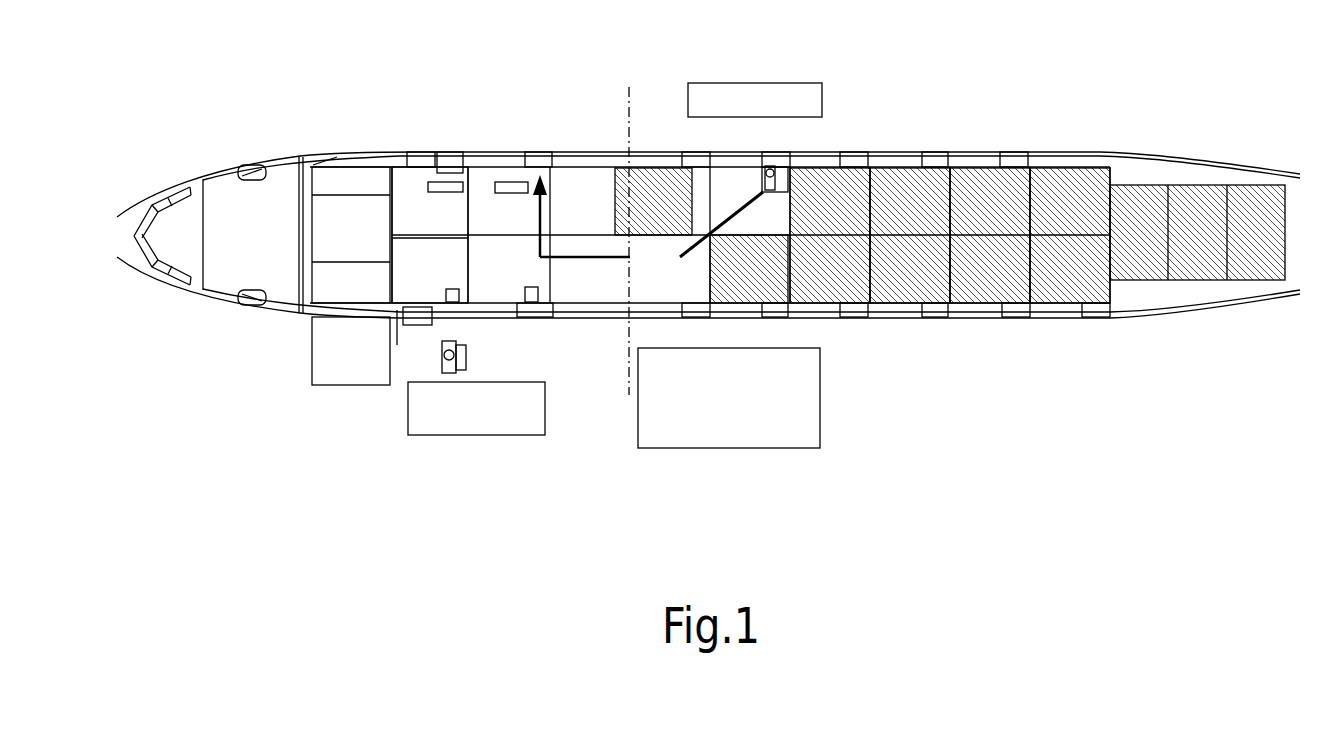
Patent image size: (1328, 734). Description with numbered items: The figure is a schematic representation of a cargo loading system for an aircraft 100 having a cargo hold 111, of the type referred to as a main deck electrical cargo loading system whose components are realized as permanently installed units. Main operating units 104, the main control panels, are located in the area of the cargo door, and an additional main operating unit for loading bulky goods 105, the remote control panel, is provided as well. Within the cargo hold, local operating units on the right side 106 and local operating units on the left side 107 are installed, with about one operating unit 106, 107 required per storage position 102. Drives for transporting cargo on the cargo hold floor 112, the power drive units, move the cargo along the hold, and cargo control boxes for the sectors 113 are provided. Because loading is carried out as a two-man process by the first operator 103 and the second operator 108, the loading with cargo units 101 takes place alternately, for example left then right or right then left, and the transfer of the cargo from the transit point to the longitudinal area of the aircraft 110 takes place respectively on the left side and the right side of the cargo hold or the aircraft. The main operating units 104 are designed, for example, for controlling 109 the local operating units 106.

The aircraft 100 is at (216, 120).
The cargo units 101 is at (358, 168).
The storage position 102 is at (410, 152).
The operator 1 103 is at (452, 436).
The main operating unit 104 is at (770, 192).
The additional main operating unit for loading bulky goods 105 is at (458, 152).
The local operating unit on the right side 106 is at (540, 152).
The local operating unit on the left side 107 is at (685, 318).
The operator 2 108 is at (765, 83).
The controlling 109 is at (680, 257).
The longitudinal area of the aircraft 110 is at (820, 425).
The cargo hold 111 is at (328, 150).
The drives for transporting cargo on the cargo hold floor 112 is at (495, 188).
The cargo control boxes for the sectors 113 is at (525, 290).